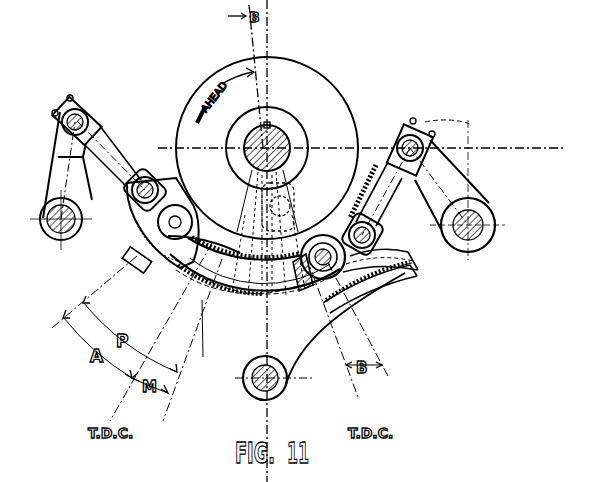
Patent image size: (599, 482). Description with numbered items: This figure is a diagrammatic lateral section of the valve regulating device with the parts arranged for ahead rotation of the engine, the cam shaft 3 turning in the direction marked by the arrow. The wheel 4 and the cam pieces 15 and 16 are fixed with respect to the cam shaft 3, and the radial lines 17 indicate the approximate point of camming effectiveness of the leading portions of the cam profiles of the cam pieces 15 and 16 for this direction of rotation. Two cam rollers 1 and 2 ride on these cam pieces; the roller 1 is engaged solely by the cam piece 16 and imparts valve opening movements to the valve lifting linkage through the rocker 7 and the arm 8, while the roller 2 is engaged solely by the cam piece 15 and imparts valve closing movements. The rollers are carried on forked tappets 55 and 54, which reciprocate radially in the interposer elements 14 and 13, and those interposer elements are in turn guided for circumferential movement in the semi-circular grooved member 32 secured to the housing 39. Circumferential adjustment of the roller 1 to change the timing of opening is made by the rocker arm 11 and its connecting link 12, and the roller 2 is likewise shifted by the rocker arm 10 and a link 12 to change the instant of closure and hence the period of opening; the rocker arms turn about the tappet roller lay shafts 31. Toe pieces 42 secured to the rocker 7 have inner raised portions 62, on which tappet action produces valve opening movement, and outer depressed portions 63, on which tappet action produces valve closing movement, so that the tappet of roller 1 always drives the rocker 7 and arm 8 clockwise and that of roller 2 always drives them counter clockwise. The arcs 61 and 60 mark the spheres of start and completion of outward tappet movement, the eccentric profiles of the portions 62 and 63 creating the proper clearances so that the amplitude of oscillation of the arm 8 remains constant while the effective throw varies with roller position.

The cam roller 1 is at (335, 233).
The cam roller 2 is at (152, 184).
The cam shaft 3 is at (283, 124).
The wheel 4 is at (313, 93).
The rocker 7 is at (320, 336).
The arm 8 is at (302, 198).
The rocker arm 10 is at (53, 185).
The rocker arm 11 is at (453, 185).
The connecting link 12 is at (115, 168).
The interposer element 13 is at (137, 228).
The interposer element 14 is at (377, 254).
The cam piece 15 is at (236, 238).
The cam piece 16 is at (306, 224).
The radial line 17 is at (177, 382).
The tappet roller lay shaft 31 is at (53, 237).
The semi-circular grooved member 32 is at (246, 285).
The housing 39 is at (260, 380).
The toe piece 42 is at (416, 280).
The forked tappet 54 is at (387, 280).
The forked tappet 55 is at (148, 266).
The arc 60 is at (187, 300).
The arc 61 is at (218, 320).
The inner raised portion 62 is at (340, 300).
The outer depressed portion 63 is at (380, 305).